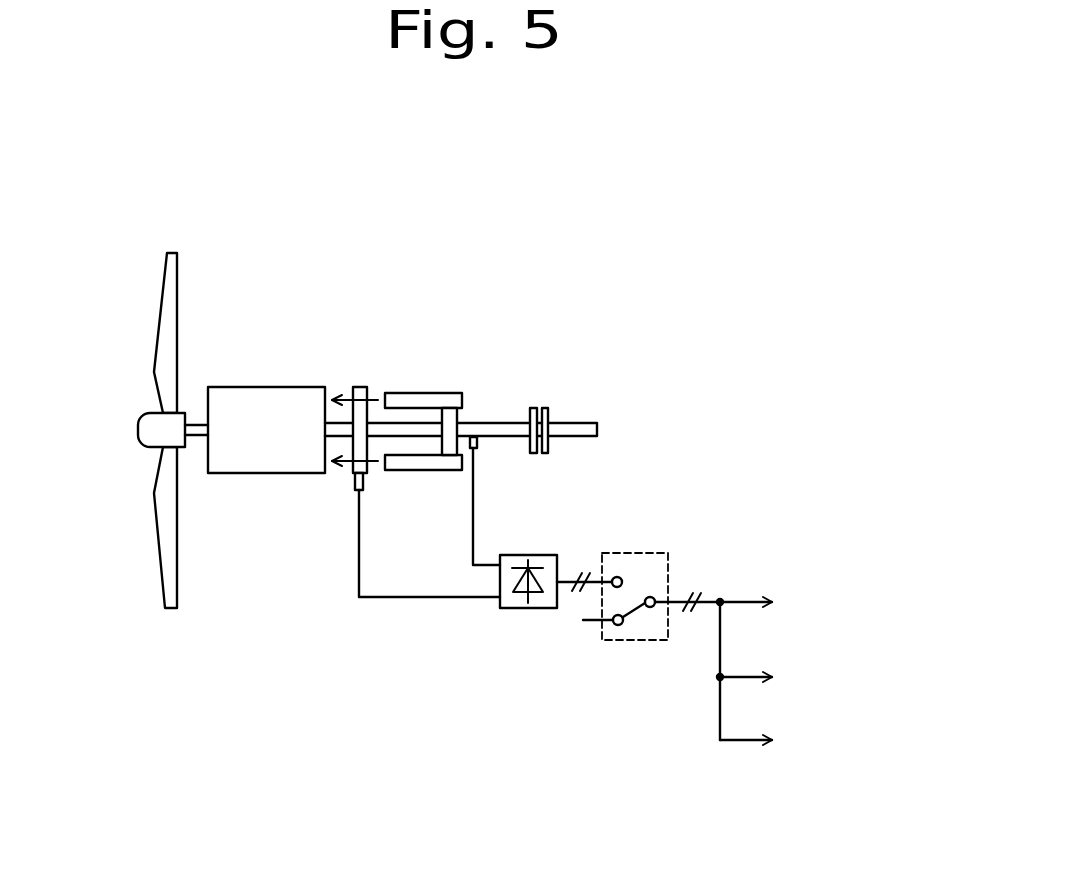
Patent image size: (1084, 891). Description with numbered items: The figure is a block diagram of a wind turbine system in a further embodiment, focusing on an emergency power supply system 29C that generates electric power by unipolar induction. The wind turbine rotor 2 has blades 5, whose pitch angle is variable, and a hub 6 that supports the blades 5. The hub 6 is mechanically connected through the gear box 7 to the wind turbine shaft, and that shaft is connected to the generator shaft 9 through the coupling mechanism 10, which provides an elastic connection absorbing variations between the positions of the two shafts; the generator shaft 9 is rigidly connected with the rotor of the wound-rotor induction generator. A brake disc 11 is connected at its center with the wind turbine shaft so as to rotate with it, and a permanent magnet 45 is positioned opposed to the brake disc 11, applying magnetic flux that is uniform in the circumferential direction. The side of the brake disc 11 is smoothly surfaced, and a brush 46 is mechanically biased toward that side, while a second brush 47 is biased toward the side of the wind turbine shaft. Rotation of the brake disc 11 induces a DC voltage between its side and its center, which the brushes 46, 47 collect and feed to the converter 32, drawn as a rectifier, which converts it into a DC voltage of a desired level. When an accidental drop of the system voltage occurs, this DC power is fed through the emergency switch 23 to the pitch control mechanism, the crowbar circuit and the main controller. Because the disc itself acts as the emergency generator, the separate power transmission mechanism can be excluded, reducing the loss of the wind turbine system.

The wind turbine rotor 2 is at (145, 240).
The blades 5 is at (158, 318).
The hub 6 is at (140, 430).
The gear box 7 is at (258, 387).
The generator shaft 9 is at (568, 437).
The coupling mechanism 10 is at (547, 408).
The brake disc 11 is at (362, 387).
The permanent magnet 45 is at (410, 393).
The brush 46 is at (356, 488).
The brush 47 is at (478, 448).
The rectifier 32 is at (533, 608).
The switch 23 is at (632, 607).
The emergency power supply system 29C is at (340, 633).